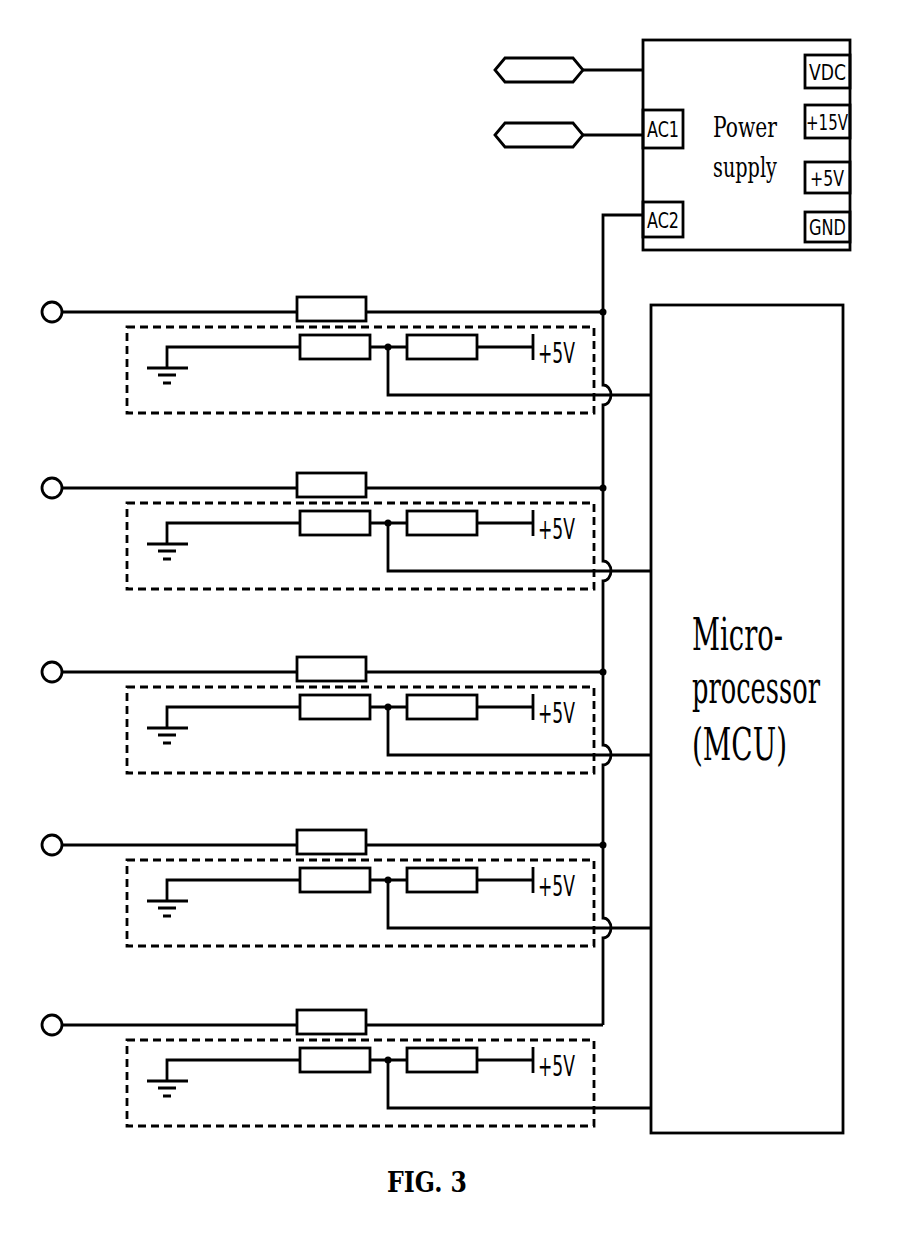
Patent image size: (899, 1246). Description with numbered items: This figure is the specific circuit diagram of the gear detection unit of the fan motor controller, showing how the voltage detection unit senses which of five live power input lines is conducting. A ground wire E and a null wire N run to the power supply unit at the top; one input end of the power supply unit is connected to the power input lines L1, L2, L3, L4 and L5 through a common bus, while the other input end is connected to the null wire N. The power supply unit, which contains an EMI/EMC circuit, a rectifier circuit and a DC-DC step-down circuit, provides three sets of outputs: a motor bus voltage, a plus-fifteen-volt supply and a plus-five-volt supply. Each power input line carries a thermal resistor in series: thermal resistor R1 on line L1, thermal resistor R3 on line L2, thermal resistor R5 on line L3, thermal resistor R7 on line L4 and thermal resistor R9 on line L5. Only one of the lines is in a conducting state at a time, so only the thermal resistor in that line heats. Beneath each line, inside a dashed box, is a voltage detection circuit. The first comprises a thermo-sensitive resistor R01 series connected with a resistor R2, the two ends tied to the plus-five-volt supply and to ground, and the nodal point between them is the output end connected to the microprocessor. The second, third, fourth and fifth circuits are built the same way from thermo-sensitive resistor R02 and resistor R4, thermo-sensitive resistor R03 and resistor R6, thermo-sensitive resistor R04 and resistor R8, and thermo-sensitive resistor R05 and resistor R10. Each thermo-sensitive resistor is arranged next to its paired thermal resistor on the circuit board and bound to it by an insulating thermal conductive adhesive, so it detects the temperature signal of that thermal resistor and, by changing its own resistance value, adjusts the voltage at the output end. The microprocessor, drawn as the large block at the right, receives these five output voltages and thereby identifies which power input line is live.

The ground wire E is at (569, 47).
The null wire N is at (569, 151).
The power input line L1 is at (165, 285).
The power input line L2 is at (165, 461).
The power input line L3 is at (165, 645).
The power input line L4 is at (165, 818).
The power input line L5 is at (165, 998).
The thermal resistor R1 is at (331, 285).
The resistor R2 is at (454, 365).
The thermal resistor R3 is at (331, 461).
The resistor R4 is at (454, 541).
The thermal resistor R5 is at (331, 645).
The resistor R6 is at (454, 725).
The thermal resistor R7 is at (331, 818).
The resistor R8 is at (454, 898).
The thermal resistor R9 is at (331, 998).
The resistor R10 is at (460, 1078).
The thermo-sensitive resistor R01 is at (335, 365).
The thermo-sensitive resistor R02 is at (335, 541).
The thermo-sensitive resistor R03 is at (335, 725).
The thermo-sensitive resistor R04 is at (335, 898).
The thermo-sensitive resistor R05 is at (335, 1078).